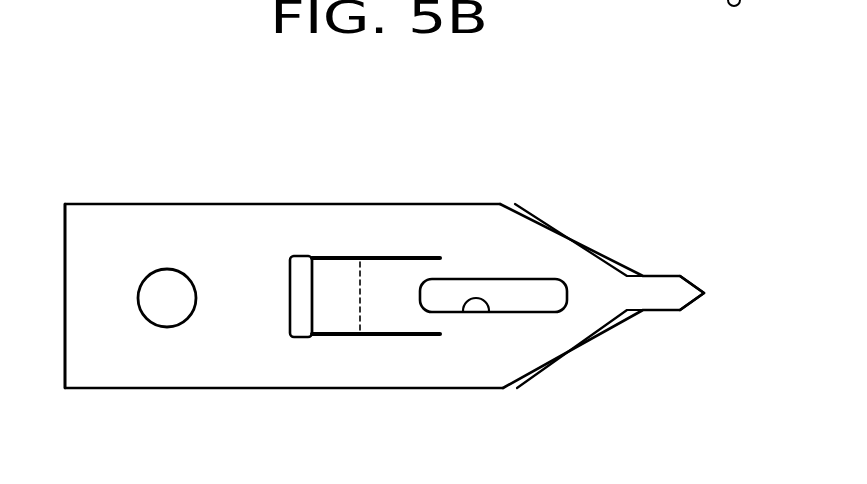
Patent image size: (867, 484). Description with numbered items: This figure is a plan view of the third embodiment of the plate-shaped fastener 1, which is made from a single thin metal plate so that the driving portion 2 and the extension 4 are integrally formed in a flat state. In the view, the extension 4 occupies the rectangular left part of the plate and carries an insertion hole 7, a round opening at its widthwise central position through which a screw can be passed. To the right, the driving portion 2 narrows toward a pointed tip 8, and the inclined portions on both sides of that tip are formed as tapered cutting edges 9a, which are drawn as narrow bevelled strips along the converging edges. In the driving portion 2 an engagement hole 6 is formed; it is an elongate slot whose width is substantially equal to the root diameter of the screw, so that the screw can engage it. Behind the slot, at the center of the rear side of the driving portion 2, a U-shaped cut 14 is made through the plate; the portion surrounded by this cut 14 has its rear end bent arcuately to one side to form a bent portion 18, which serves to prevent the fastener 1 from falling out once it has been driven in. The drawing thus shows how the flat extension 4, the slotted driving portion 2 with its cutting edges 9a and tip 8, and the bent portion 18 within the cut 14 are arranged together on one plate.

The plate-shaped fastener 1 is at (128, 200).
The driving portion 2 is at (481, 232).
The extension 4 is at (240, 226).
The engagement hole 6 is at (488, 308).
The insertion hole 7 is at (167, 290).
The pointed tip 8 is at (705, 292).
The tapered cutting edges 9a is at (573, 238).
The cut 14 is at (358, 258).
The bent portion 18 is at (327, 318).